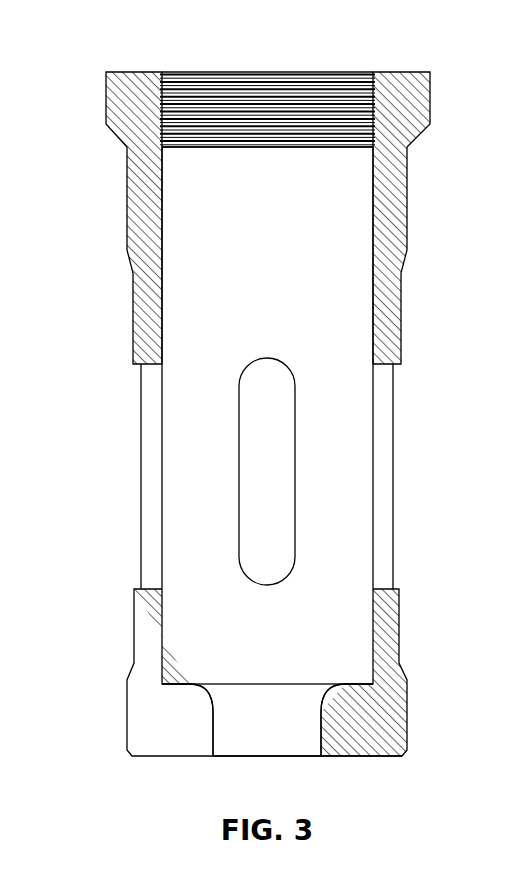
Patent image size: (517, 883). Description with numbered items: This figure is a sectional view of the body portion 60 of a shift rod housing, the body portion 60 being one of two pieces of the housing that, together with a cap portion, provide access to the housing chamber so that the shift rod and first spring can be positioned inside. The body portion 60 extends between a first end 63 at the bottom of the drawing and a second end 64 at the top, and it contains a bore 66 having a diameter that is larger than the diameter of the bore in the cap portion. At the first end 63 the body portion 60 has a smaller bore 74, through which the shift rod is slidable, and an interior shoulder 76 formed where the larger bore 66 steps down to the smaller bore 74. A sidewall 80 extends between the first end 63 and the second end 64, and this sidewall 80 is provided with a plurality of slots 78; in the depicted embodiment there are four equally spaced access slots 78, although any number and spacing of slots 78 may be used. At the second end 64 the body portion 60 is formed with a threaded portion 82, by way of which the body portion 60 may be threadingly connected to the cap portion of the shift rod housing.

The body portion 60 is at (90, 54).
The first end 63 is at (365, 757).
The second end 64 is at (130, 72).
The bore 66 is at (155, 216).
The bore 74 is at (215, 733).
The interior shoulder 76 is at (178, 683).
The slots 78 is at (243, 400).
The sidewall 80 is at (402, 318).
The threaded portion 82 is at (375, 110).